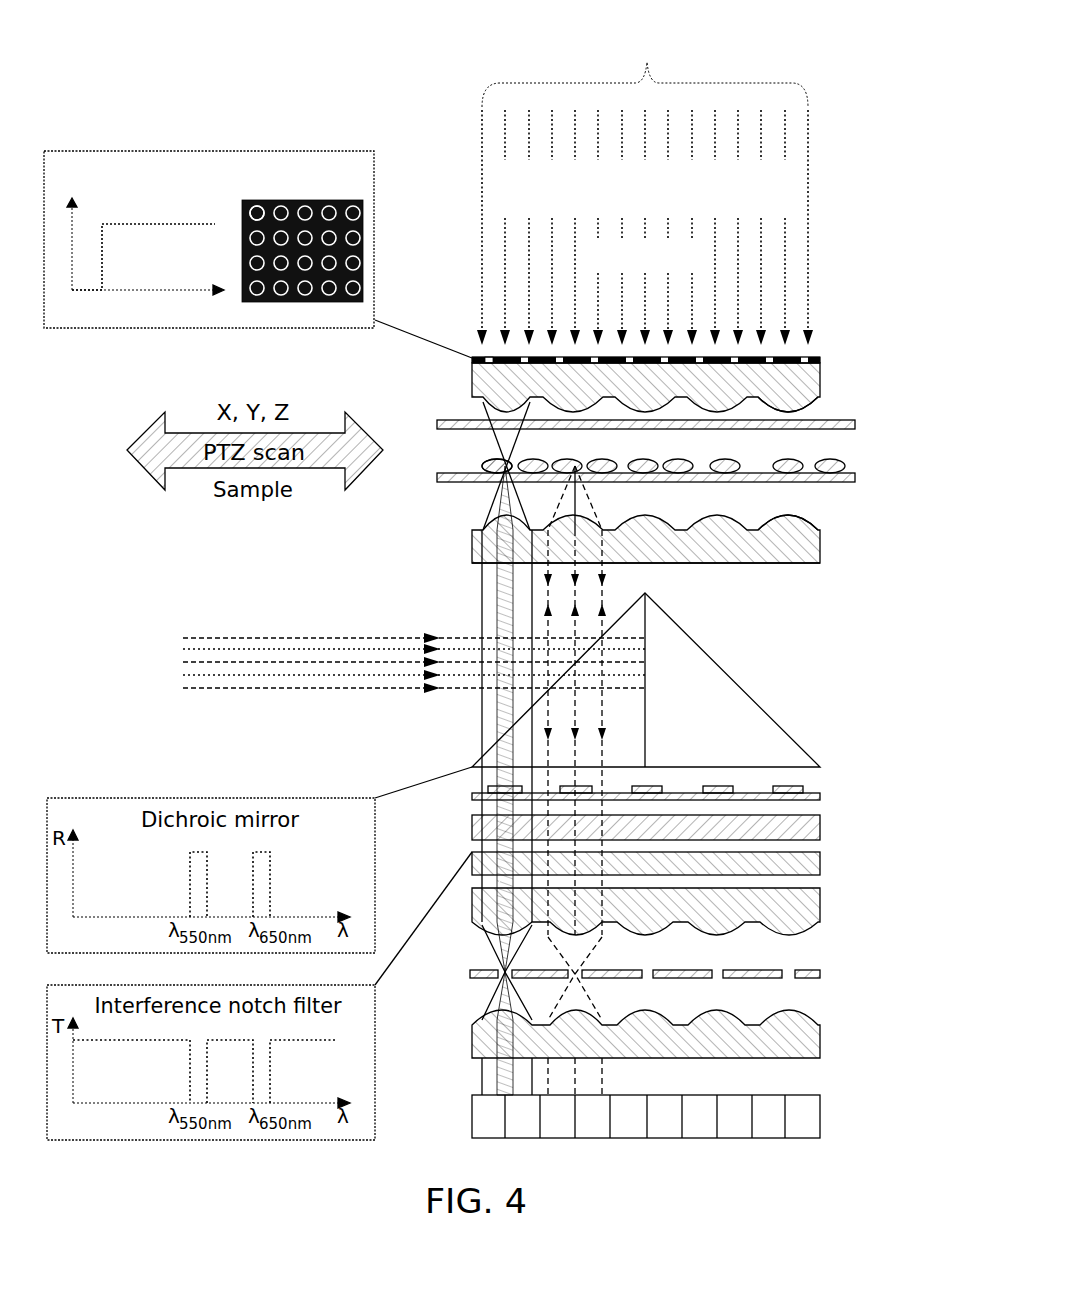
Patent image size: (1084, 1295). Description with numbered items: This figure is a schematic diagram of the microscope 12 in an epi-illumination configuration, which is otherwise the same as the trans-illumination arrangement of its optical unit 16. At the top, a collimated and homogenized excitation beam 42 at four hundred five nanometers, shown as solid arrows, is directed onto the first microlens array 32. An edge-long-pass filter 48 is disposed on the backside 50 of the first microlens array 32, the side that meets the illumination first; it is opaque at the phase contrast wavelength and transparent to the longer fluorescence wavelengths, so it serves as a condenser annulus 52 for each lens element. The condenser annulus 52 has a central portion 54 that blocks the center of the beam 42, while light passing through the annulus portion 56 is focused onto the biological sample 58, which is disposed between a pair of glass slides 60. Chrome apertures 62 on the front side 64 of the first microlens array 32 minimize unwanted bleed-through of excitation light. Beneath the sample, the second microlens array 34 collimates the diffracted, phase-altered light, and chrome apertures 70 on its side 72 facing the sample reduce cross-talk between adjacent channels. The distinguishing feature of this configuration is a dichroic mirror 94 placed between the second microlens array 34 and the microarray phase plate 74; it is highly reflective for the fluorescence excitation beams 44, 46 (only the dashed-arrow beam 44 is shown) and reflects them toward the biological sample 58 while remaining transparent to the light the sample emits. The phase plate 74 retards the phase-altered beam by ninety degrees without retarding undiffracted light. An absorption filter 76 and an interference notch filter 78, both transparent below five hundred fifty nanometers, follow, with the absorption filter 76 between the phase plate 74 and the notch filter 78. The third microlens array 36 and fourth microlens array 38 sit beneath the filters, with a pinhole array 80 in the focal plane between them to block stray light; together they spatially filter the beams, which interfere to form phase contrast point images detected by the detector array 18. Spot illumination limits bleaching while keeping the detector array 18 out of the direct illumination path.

The microscope 12 is at (872, 279).
The optical unit 16 is at (862, 770).
The detector array 18 is at (806, 1116).
The first microlens array 32 is at (820, 386).
The second microlens array 34 is at (822, 549).
The third microlens array 36 is at (821, 905).
The fourth microlens array 38 is at (821, 1041).
The 405 nm excitation beam 42 is at (645, 191).
The 550 nm excitation beam 44 is at (196, 634).
The 650 nm excitation beam 46 is at (184, 640).
The edge-long-pass filter 48 is at (822, 361).
The backside 50 is at (805, 357).
The condenser annulus 52 is at (263, 194).
The central portion 54 is at (240, 207).
The annulus portion 56 is at (248, 200).
The biological sample 58 is at (484, 460).
The glass slides 60 is at (846, 470).
The chrome apertures 62 is at (806, 411).
The front side 64 is at (856, 426).
The chrome apertures 70 is at (830, 531).
The side 72 is at (800, 517).
The microarray phase plate 74 is at (821, 797).
The absorption filter 76 is at (821, 827).
The interference notch filter 78 is at (821, 863).
The pinhole array 80 is at (821, 974).
The dichroic mirror 94 is at (750, 703).